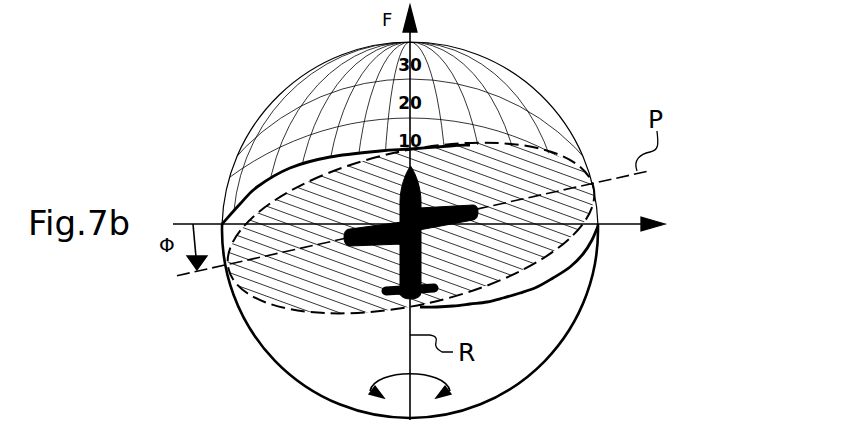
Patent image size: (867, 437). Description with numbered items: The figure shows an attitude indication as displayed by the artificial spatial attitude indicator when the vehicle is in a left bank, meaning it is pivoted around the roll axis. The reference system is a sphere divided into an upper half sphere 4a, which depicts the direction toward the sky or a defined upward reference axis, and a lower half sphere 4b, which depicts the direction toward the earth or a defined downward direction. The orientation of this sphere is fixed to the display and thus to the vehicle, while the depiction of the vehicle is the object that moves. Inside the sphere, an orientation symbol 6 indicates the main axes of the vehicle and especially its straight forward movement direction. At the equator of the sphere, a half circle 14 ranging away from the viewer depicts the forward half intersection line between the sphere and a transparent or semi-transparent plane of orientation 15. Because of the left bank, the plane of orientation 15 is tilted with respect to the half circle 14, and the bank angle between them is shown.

The upper half sphere 4a is at (518, 76).
The lower half sphere 4b is at (575, 322).
The orientation symbol 6 is at (395, 266).
The half circle 14 is at (293, 167).
The plane of orientation 15 is at (268, 213).